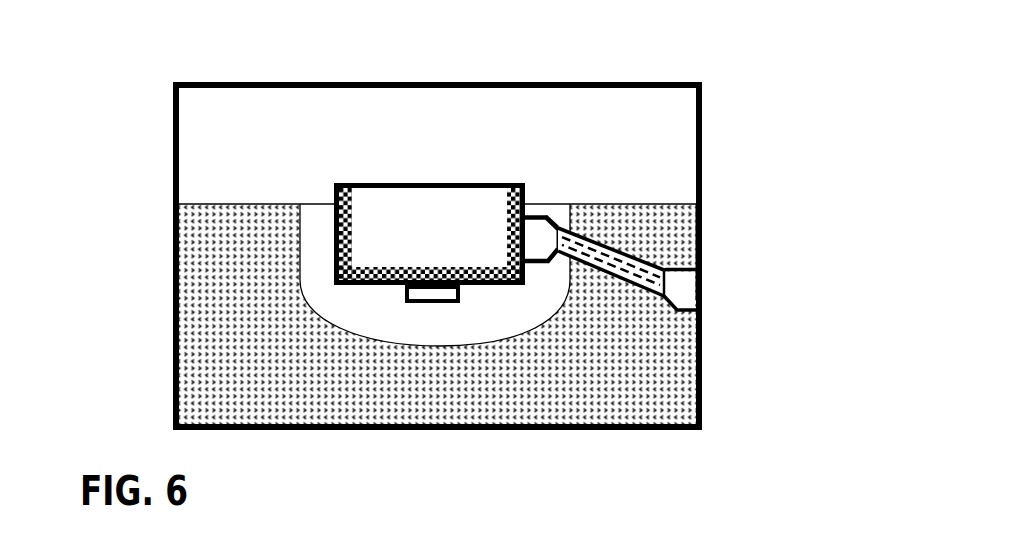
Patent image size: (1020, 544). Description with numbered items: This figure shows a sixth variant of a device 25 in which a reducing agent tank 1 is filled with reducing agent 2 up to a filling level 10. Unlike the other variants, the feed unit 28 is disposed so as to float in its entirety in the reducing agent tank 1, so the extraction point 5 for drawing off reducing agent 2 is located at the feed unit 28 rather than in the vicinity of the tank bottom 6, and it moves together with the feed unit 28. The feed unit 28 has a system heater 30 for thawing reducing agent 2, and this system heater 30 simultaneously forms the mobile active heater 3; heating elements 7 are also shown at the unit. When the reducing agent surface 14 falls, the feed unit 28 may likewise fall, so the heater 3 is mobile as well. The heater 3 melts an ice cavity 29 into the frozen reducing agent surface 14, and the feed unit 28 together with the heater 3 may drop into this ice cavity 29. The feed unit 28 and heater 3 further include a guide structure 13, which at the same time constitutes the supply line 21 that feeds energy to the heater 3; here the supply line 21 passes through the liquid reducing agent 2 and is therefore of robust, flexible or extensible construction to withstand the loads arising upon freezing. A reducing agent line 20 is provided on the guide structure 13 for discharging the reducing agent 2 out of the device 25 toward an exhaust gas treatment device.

The reducing agent tank 1 is at (406, 82).
The reducing agent 2 is at (663, 215).
The mobile active heater 3 is at (429, 193).
The extraction point 5 is at (430, 303).
The tank bottom 6 is at (300, 430).
The heating elements 7 is at (353, 233).
The filling level 10 is at (181, 202).
The guide structure 13 is at (648, 266).
The reducing agent surface 14 is at (278, 205).
The reducing agent line 20 is at (596, 270).
The electric supply line 21 is at (623, 262).
The device 25 is at (722, 90).
The feed unit 28 is at (402, 185).
The ice cavity 29 is at (558, 211).
The system heater 30 is at (355, 205).